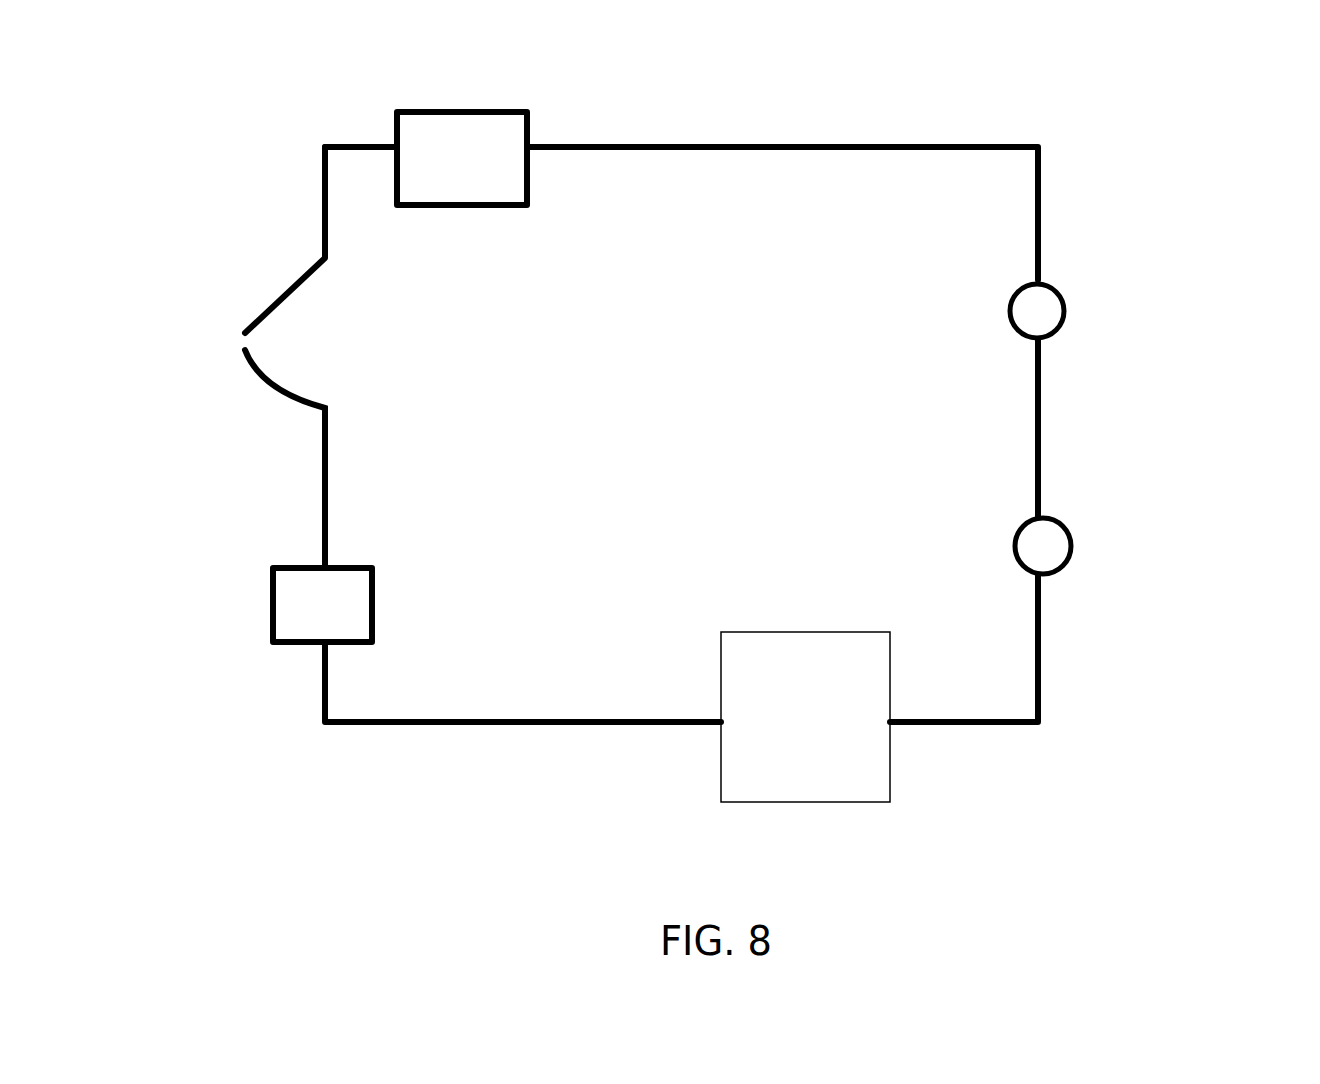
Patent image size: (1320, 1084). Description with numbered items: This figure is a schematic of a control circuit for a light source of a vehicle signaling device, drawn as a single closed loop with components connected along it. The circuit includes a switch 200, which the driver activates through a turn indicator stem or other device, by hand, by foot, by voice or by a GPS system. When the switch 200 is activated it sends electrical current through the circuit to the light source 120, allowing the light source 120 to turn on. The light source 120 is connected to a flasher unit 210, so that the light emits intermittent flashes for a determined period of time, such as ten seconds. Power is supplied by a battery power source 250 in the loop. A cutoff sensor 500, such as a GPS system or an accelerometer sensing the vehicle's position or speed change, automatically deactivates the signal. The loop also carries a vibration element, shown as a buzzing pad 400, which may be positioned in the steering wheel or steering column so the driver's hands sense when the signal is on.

The cutoff sensor 500 is at (503, 117).
The switch 200 is at (272, 392).
The battery power source 250 is at (283, 655).
The flasher unit 210 is at (1073, 303).
The light source 120 is at (1078, 550).
The buzzing pad 400 is at (807, 717).